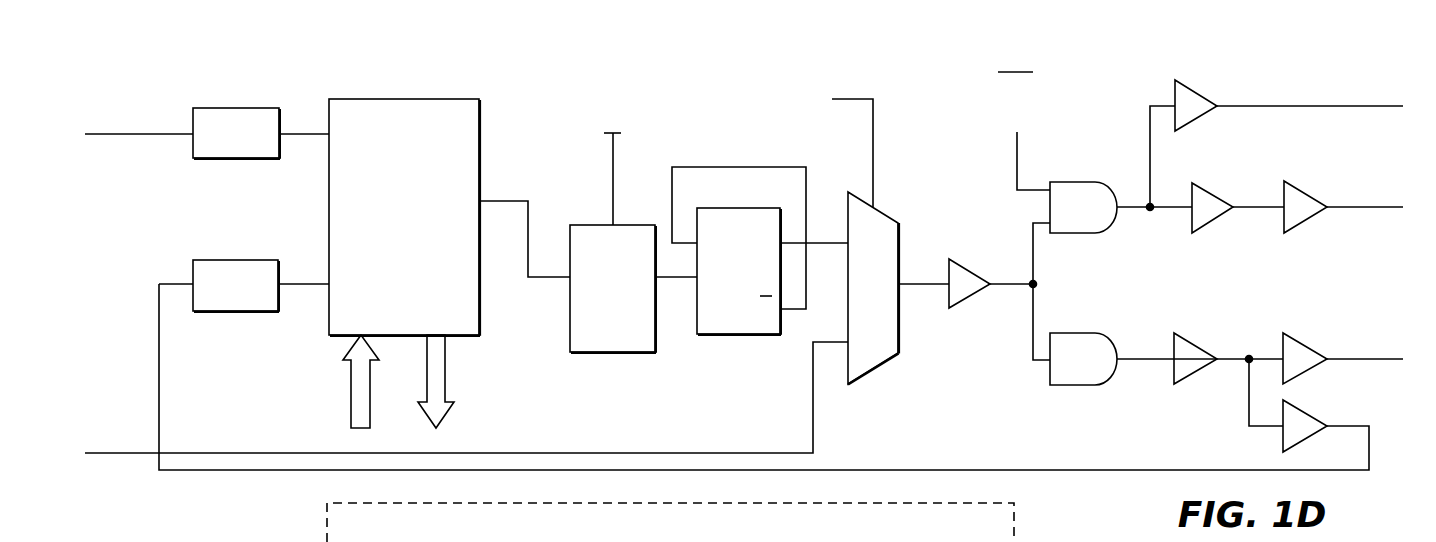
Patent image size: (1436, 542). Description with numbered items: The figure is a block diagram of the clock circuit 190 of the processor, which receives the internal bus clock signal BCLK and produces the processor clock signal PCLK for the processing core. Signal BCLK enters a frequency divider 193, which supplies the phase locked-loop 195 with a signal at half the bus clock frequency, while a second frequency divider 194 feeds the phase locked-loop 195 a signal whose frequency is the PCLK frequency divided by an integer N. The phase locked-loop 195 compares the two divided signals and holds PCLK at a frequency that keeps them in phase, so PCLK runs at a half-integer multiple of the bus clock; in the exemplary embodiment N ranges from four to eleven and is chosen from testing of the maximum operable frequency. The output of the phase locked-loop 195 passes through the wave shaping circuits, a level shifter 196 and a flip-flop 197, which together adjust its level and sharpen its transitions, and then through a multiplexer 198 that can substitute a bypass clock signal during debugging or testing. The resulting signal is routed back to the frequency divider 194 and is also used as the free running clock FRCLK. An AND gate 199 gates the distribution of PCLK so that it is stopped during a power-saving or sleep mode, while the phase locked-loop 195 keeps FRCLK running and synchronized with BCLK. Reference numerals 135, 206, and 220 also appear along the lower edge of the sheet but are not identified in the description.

The clock circuit 190 is at (1103, 56).
The frequency divider 193 is at (260, 159).
The frequency divider 194 is at (260, 312).
The phase locked-loop (PLL) 195 is at (446, 99).
The wave shaping circuit (level shifter) 196 is at (640, 353).
The wave shaping circuit (flip-flop) 197 is at (766, 335).
The multiplexer 198 is at (878, 367).
The AND gate 199 is at (1075, 181).
The processor module 135 is at (1014, 537).
The bus 206 is at (270, 530).
The memory 220 is at (506, 541).